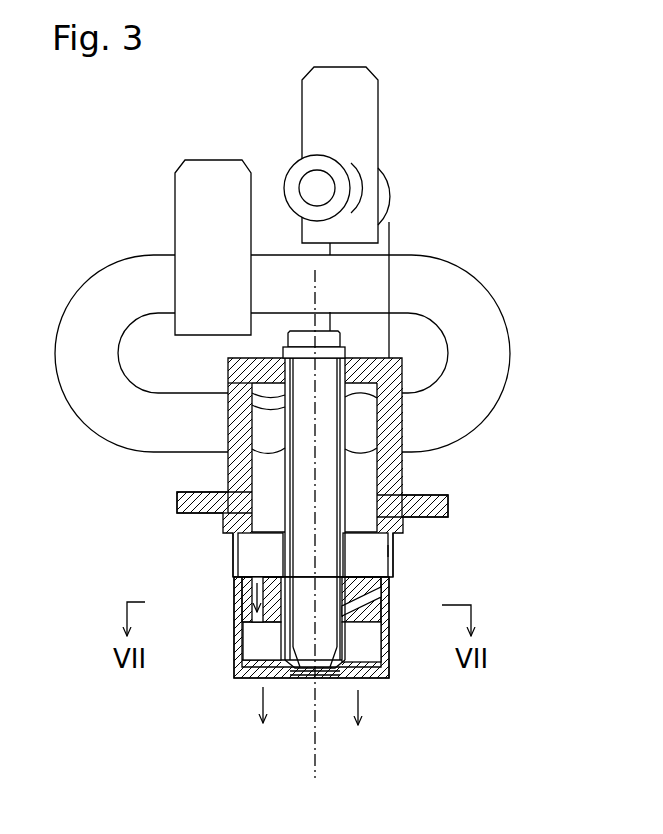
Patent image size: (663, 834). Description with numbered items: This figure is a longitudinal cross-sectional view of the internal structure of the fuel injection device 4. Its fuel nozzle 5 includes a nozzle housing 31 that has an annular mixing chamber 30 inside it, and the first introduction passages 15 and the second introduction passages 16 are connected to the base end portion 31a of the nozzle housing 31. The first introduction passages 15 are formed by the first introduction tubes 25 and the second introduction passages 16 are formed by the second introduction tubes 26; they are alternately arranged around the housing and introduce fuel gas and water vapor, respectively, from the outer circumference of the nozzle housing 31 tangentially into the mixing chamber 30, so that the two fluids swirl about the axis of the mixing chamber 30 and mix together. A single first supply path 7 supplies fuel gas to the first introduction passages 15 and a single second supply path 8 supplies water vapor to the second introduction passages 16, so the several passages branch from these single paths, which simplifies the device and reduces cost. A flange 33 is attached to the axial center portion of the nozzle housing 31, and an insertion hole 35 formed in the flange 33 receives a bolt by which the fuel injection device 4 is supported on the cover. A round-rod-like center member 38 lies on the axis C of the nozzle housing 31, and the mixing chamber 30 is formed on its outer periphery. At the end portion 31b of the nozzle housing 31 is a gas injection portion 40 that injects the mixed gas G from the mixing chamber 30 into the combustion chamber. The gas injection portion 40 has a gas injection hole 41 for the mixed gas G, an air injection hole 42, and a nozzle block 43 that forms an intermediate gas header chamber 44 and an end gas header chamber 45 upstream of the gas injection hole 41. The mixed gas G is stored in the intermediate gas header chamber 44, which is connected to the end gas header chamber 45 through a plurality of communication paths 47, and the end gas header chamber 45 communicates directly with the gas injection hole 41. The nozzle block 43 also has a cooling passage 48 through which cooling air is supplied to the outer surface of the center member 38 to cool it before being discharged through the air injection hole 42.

The fuel injection device 4 is at (506, 297).
The fuel nozzle 5 is at (213, 473).
The first supply path 7 is at (380, 93).
The second supply path 8 is at (175, 200).
The first introduction passage 15 is at (317, 188).
The second introduction passage 16 is at (483, 333).
The first introduction tube 25 is at (300, 173).
The second introduction tube 26 is at (72, 292).
The mixing chamber 30 is at (357, 466).
The nozzle housing 31 is at (402, 405).
The base end portion 31a is at (227, 380).
The end portion 31b is at (405, 540).
The flange 33 is at (432, 495).
The insertion hole 35 is at (195, 513).
The center member 38 is at (300, 498).
The gas injection portion 40 is at (203, 533).
The gas injection hole 41 is at (367, 675).
The air injection hole 42 is at (302, 680).
The nozzle block 43 is at (390, 578).
The intermediate gas header chamber 44 is at (390, 551).
The end gas header chamber 45 is at (363, 645).
The communication path 47 is at (250, 640).
The cooling passage 48 is at (393, 597).
The mixed gas G is at (233, 663).
The axis C is at (321, 539).